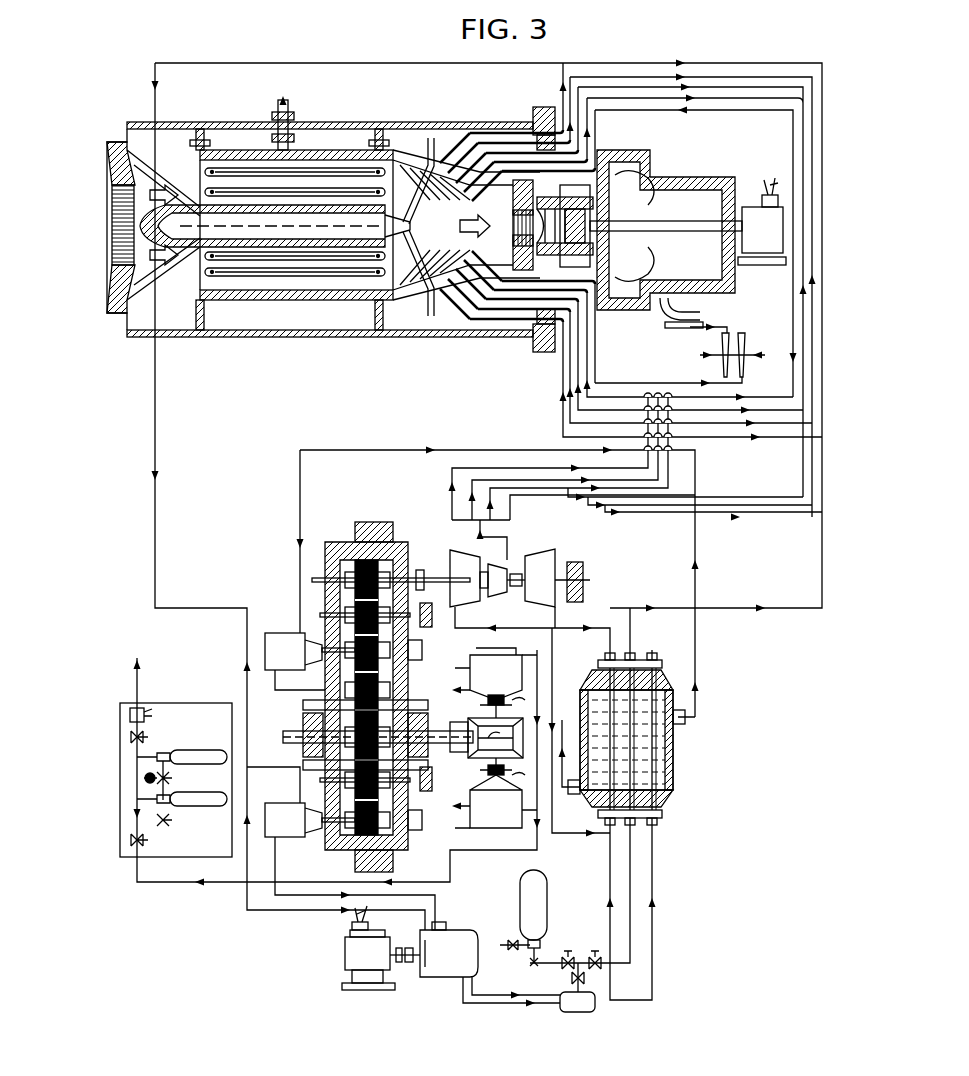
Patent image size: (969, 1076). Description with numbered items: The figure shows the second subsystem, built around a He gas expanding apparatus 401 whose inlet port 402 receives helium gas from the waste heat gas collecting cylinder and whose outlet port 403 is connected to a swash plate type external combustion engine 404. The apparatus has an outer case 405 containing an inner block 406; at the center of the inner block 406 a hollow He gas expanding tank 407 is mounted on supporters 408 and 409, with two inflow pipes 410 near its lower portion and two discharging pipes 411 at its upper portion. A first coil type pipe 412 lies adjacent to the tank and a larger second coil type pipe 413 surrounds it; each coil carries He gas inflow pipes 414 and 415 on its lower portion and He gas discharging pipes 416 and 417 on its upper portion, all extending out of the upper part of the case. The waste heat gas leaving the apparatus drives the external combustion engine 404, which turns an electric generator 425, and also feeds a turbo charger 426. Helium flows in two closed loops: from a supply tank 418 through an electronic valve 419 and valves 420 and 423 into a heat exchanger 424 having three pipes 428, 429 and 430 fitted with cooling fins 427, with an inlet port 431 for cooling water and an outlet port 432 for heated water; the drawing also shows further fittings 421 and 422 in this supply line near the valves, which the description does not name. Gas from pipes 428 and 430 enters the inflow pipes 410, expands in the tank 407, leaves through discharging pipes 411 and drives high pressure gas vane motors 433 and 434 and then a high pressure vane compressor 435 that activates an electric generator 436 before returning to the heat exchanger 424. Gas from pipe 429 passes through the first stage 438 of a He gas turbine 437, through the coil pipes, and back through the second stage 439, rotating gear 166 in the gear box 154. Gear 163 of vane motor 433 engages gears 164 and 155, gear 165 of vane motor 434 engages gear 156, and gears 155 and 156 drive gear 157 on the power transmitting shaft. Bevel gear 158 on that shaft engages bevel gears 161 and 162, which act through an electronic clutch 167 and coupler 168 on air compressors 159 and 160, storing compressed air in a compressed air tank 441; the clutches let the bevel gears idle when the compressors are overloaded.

The He gas expanding apparatus 401 is at (412, 108).
The inlet port 402 is at (134, 122).
The outlet port 403 is at (440, 320).
The swash plate type external combustion engine 404 is at (702, 170).
The outer case 405 is at (379, 135).
The inner block 406 is at (134, 337).
The hollow He gas expanding tank 407 is at (210, 247).
The supporter 408 is at (200, 140).
The supporter 409 is at (355, 150).
The inflow pipe 410 is at (462, 143).
The discharging pipe 411 is at (450, 138).
The first coil type pipe 412 is at (298, 260).
The second coil type pipe 413 is at (265, 268).
The He gas inflow pipe 414 is at (598, 180).
The He gas inflow pipe 415 is at (512, 153).
The He gas discharging pipe 416 is at (578, 185).
The He gas discharging pipe 417 is at (488, 133).
The He gas supply tank 418 is at (541, 900).
The electronic valve 419 is at (545, 955).
The valve 420 is at (570, 952).
The valve 421 is at (572, 983).
The filter 422 is at (595, 1008).
The valve 423 is at (600, 969).
The heat exchanger 424 is at (712, 746).
The electric generator 425 is at (750, 210).
The turbo charger 426 is at (740, 345).
The cooling fins 427 is at (662, 737).
The pipe 428 is at (660, 782).
The pipe 429 is at (640, 768).
The pipe 430 is at (600, 692).
The inlet port 431 is at (687, 722).
The outlet port 432 is at (572, 795).
The high pressure gas vane motor 433 is at (288, 640).
The high pressure gas vane motor 434 is at (287, 810).
The high pressure vane compressor 435 is at (458, 940).
The electric generator 436 is at (360, 948).
The He gas turbine 437 is at (572, 554).
The first stage 438 is at (466, 560).
The second stage 439 is at (548, 600).
The compressed air tank 441 is at (190, 703).
The gear box 154 is at (397, 513).
The gear 155 is at (308, 720).
The gear 156 is at (305, 762).
The gear 157 is at (290, 733).
The bevel gear 158 is at (462, 752).
The air compressor 159 is at (475, 648).
The air compressor 160 is at (490, 818).
The bevel gear 161 is at (497, 733).
The bevel gear 162 is at (492, 748).
The gear 163 is at (405, 600).
The gear 164 is at (345, 565).
The gear 165 is at (348, 858).
The gear 166 is at (395, 565).
The electronic clutch 167 is at (485, 690).
The coupler 168 is at (485, 700).